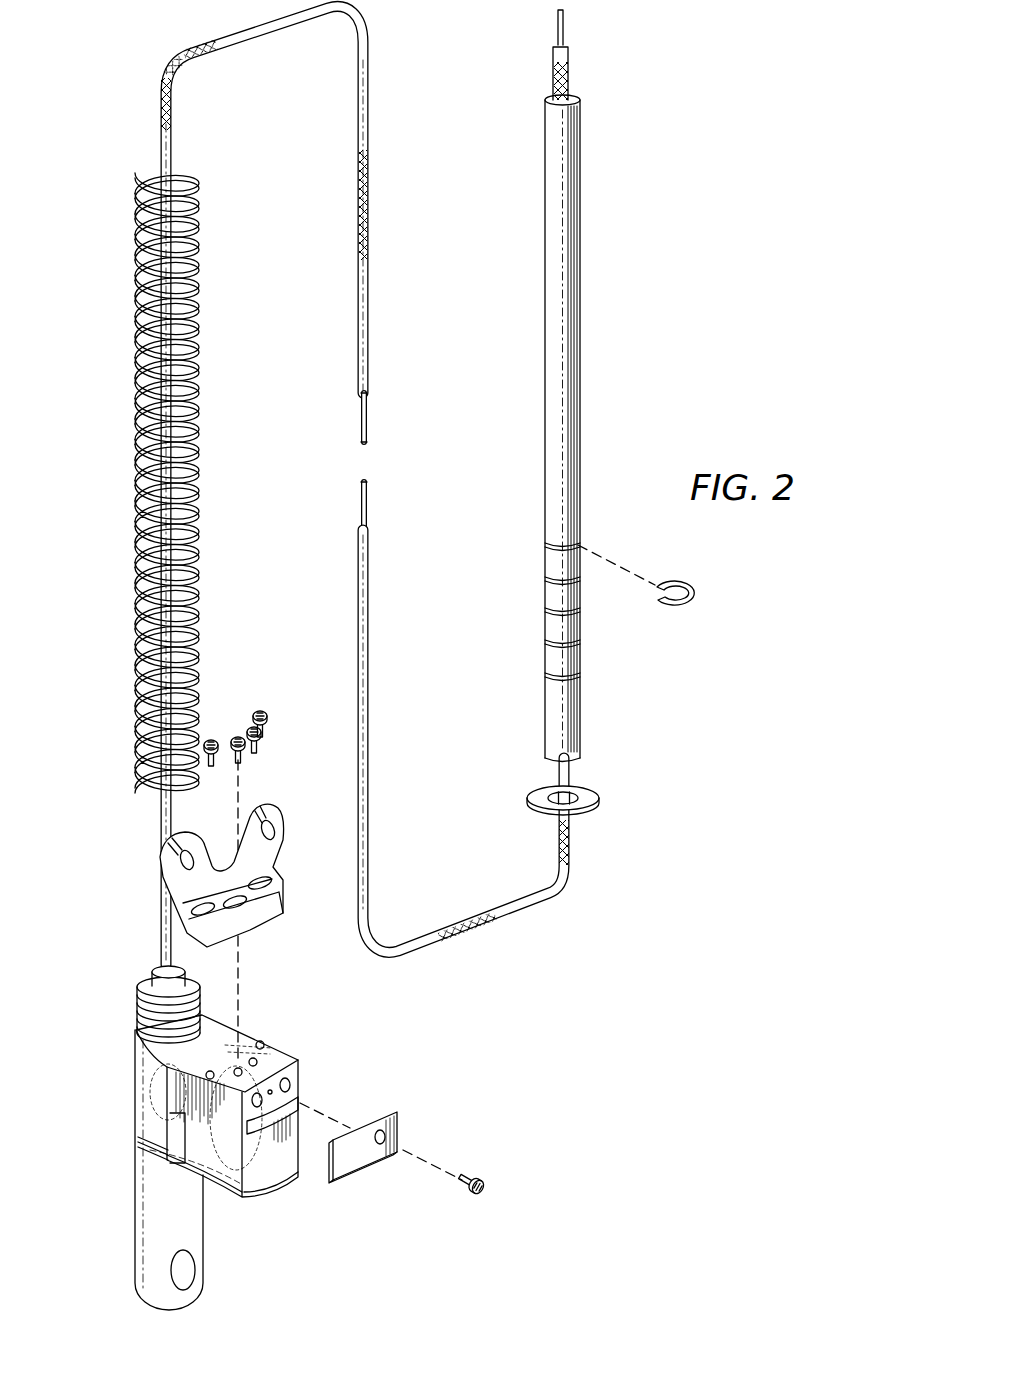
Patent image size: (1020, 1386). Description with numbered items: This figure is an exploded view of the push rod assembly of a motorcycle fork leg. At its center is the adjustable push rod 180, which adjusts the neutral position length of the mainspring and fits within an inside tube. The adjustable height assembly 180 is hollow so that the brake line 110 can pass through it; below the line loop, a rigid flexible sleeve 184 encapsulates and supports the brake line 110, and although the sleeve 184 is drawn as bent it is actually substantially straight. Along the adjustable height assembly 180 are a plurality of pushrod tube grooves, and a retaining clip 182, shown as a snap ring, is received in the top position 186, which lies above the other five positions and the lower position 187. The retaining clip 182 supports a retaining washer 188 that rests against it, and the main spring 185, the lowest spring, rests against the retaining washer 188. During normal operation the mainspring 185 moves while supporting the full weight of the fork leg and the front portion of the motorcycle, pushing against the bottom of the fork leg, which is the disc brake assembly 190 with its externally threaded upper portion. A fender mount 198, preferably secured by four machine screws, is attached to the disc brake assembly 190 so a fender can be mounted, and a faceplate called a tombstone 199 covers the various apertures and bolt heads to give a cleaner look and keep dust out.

The brake line 110 is at (368, 505).
The adjustable push rod 180 is at (579, 320).
The retaining clip 182 is at (690, 607).
The rigid flexible sleeve 184 is at (478, 930).
The main spring 185 is at (203, 441).
The top position 186 is at (547, 543).
The lower position 187 is at (545, 673).
The retaining washer 188 is at (599, 797).
The disc brake assembly 190 is at (135, 1088).
The fender mount 198 is at (268, 863).
The tombstone 199 is at (397, 1133).